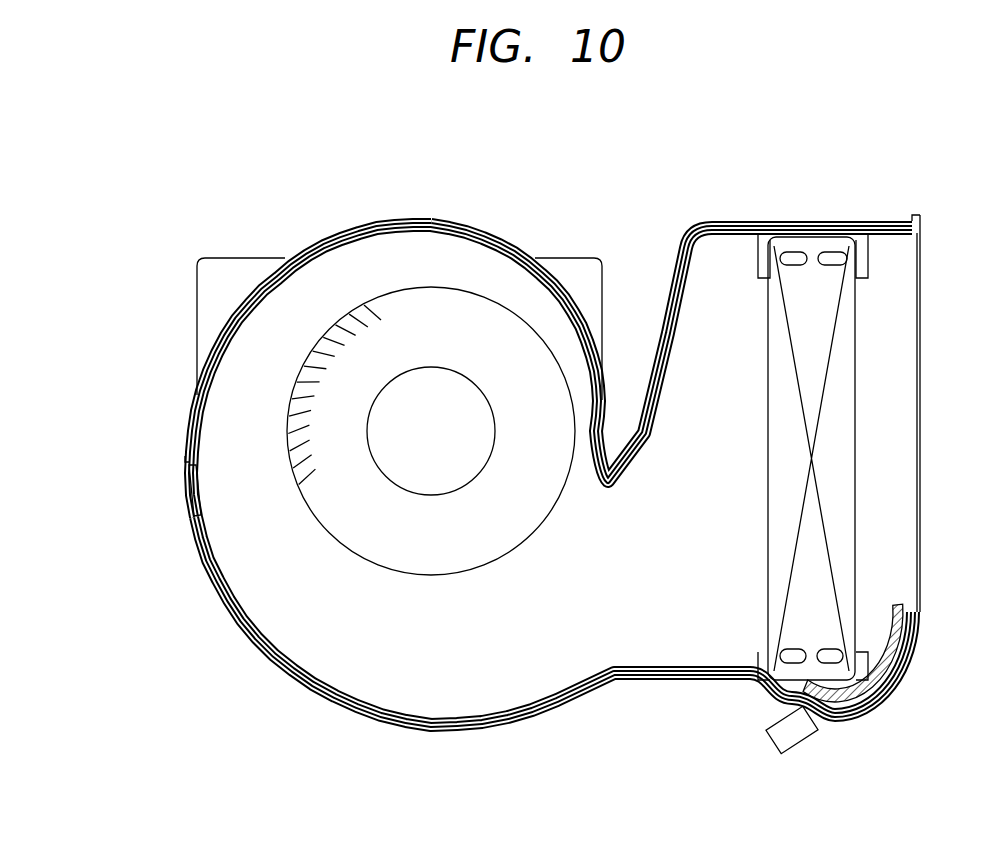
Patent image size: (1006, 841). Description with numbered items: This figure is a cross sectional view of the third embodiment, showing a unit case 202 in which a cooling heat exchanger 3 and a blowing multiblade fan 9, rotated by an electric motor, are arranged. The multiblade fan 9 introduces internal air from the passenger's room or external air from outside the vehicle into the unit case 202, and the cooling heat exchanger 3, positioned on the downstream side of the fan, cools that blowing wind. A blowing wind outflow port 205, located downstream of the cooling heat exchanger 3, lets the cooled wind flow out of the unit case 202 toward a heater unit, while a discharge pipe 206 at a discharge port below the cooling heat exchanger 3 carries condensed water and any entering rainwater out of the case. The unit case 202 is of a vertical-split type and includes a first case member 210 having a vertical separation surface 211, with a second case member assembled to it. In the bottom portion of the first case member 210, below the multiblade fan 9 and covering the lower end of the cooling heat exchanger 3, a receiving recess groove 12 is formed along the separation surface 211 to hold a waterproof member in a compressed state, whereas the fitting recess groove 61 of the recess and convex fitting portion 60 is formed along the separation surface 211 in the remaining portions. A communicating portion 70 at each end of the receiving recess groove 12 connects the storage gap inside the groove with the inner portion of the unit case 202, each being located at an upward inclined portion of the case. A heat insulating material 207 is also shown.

The cooling heat exchanger 3 is at (766, 493).
The multiblade fan 9 is at (516, 557).
The receiving recess groove 12 is at (262, 640).
The recess and convex fitting portion 60 is at (311, 332).
The fitting recess groove 61 is at (331, 235).
The communicating portion 70 is at (199, 506).
The unit case 202 is at (478, 226).
The blowing wind outflow port 205 is at (922, 408).
The discharge pipe 206 is at (806, 734).
The heat insulating material 207 is at (870, 703).
The first case member 210 is at (671, 310).
The separation surface 211 is at (187, 460).